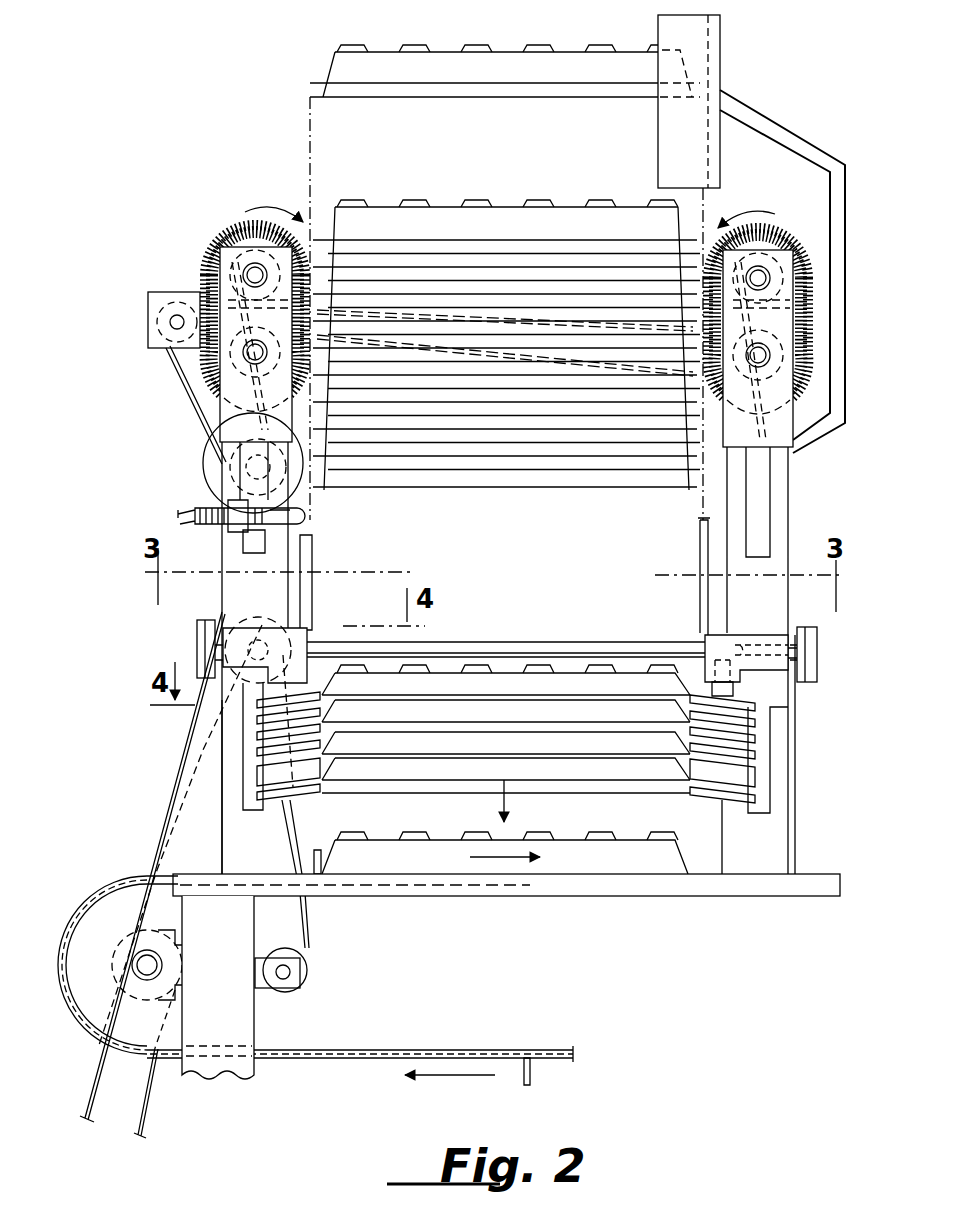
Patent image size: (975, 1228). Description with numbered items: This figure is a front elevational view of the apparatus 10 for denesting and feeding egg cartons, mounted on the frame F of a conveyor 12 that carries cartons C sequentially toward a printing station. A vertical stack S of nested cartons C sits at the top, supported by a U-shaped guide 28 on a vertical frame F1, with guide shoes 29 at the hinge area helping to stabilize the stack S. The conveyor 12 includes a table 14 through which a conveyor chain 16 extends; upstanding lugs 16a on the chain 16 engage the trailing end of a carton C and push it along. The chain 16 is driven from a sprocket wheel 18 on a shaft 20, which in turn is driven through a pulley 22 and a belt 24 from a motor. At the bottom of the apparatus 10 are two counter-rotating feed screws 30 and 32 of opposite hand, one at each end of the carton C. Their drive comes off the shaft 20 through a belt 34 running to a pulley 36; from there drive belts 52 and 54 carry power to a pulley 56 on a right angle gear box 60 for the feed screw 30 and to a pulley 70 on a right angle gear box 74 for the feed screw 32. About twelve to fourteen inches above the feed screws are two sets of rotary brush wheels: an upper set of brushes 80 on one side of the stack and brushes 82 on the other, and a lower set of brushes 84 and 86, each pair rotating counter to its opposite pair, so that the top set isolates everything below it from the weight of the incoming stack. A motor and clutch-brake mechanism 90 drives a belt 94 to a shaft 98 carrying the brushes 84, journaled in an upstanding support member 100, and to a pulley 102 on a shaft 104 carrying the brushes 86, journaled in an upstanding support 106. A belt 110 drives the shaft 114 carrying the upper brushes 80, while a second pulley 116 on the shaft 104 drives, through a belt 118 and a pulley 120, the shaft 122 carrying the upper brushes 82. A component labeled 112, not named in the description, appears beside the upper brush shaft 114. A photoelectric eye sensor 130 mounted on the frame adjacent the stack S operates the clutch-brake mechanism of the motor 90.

The apparatus 10 is at (118, 483).
The conveyor 12 is at (571, 991).
The table 14 is at (490, 897).
The conveyor chain 16 is at (456, 1050).
The upstanding lugs 16a is at (318, 858).
The sprocket wheel 18 is at (97, 975).
The shaft 20 is at (152, 964).
The pulley 22 is at (142, 1019).
The belt 24 is at (152, 1105).
The U-shaped guide 28 is at (700, 65).
The guide shoes 29 is at (700, 543).
The feed screw 30 is at (272, 762).
The feed screw 32 is at (750, 765).
The belt 34 is at (172, 806).
The pulley 36 is at (203, 836).
The drive belt 52 is at (205, 633).
The drive belt 54 is at (810, 646).
The pulley 56 is at (220, 641).
The right angle gear box 60 is at (298, 640).
The pulley 70 is at (818, 672).
The right angle gear box 74 is at (770, 668).
The rotary brush wheels 80 is at (258, 218).
The rotary brush wheels 82 is at (772, 240).
The lower brush wheels 84 is at (205, 354).
The lower brush wheels 86 is at (793, 400).
The motor and clutch-brake mechanism 90 is at (212, 468).
The drive belt 94 is at (222, 400).
The shaft 98 is at (252, 355).
The upstanding support member 100 is at (240, 425).
The pulley 102 is at (764, 398).
The shaft 104 is at (758, 362).
The upstanding support 106 is at (783, 432).
The belt 110 is at (215, 270).
The brush core 112 is at (240, 258).
The shaft 114 is at (250, 272).
The second pulley 116 is at (768, 340).
The belt 118 is at (782, 325).
The pulley 120 is at (806, 250).
The shaft 122 is at (762, 275).
The photoelectric eye sensor 130 is at (298, 515).
The stack S is at (510, 215).
The cartons C is at (632, 880).
The frame F is at (238, 1065).
The vertical frame F1 is at (785, 529).